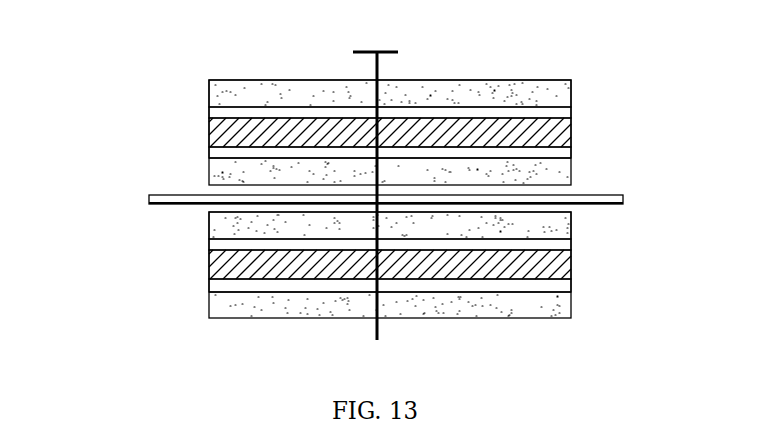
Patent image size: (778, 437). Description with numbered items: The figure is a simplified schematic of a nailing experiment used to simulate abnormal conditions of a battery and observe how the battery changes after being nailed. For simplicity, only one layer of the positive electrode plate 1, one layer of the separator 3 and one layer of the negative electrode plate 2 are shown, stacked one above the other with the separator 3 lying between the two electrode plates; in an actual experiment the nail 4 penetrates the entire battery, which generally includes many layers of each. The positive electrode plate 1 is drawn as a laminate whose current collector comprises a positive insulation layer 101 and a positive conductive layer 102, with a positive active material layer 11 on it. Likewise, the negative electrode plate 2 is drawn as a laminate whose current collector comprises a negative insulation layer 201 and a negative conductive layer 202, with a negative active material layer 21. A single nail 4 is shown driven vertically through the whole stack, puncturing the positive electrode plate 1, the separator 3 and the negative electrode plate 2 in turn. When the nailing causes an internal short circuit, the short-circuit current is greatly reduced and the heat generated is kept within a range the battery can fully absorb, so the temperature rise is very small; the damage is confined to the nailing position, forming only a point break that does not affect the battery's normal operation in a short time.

The positive electrode plate 1 is at (205, 107).
The positive active material layer 11 is at (547, 97).
The positive insulation layer 101 is at (212, 133).
The positive conductive layer 102 is at (551, 113).
The negative electrode plate 2 is at (205, 283).
The negative active material layer 21 is at (553, 222).
The negative insulation layer 201 is at (210, 265).
The negative conductive layer 202 is at (553, 245).
The separator 3 is at (193, 195).
The nail 4 is at (373, 68).